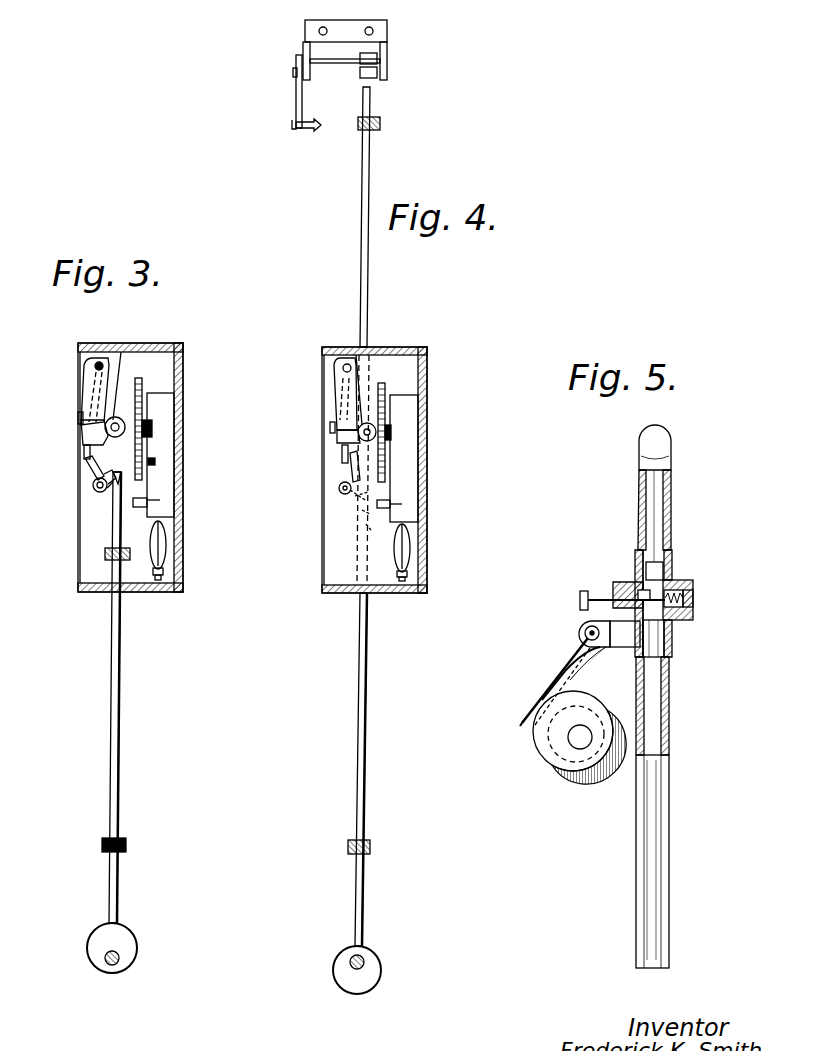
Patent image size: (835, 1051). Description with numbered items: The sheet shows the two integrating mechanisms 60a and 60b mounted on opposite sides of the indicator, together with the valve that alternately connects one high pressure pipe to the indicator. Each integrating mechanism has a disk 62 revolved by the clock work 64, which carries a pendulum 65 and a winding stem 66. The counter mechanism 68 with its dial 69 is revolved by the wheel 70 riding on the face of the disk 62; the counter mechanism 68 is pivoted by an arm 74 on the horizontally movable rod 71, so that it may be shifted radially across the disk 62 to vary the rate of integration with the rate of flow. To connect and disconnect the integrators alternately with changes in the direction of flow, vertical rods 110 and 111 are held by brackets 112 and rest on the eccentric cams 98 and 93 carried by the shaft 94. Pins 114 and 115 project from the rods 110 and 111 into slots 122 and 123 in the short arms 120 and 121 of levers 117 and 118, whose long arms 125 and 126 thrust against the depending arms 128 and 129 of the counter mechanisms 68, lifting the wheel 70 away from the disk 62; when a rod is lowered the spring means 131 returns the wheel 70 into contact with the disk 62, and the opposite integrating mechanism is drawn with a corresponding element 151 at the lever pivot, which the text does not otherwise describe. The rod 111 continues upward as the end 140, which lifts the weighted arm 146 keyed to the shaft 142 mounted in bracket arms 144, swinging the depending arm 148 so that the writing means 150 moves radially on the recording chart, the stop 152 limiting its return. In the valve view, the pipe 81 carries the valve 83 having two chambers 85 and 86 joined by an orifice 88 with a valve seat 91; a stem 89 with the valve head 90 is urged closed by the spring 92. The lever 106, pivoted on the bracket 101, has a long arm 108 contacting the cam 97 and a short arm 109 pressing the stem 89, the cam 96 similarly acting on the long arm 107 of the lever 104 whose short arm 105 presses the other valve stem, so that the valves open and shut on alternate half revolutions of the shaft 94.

In FIG. 3, the integrating mechanism 60a is at (177, 344).
In FIG. 4, the integrating mechanism 60b is at (413, 347).
In FIG. 3, the disk 62 is at (143, 388).
In FIG. 4, the disk 62 is at (386, 389).
In FIG. 3, the clock work 64 is at (163, 438).
In FIG. 4, the clock work 64 is at (405, 442).
In FIG. 3, the pendulum 65 is at (163, 548).
In FIG. 4, the pendulum 65 is at (410, 549).
In FIG. 3, the winding stem 66 is at (147, 492).
In FIG. 4, the winding stem 66 is at (388, 496).
In FIG. 3, the counter mechanism 68 is at (92, 433).
In FIG. 4, the counter mechanism 68 is at (338, 438).
In FIG. 3, the dial 69 is at (80, 421).
In FIG. 4, the dial 69 is at (331, 423).
In FIG. 3, the wheel 70 is at (119, 419).
In FIG. 4, the wheel 70 is at (367, 432).
In FIG. 3, the horizontally movable rod 71 is at (89, 352).
In FIG. 4, the horizontally movable rod 71 is at (341, 357).
In FIG. 3, the arm 74 is at (116, 352).
In FIG. 4, the arm 74 is at (356, 347).
In FIG. 5, the pipe 81 is at (653, 818).
In FIG. 5, the valve 83 is at (631, 553).
In FIG. 5, the chamber 85 is at (660, 566).
In FIG. 5, the chamber 86 is at (657, 630).
In FIG. 5, the orifice 88 is at (674, 579).
In FIG. 5, the stem 89 is at (609, 596).
In FIG. 5, the valve head 90 is at (694, 610).
In FIG. 5, the valve seat 91 is at (684, 588).
In FIG. 5, the spring 92 is at (694, 599).
In FIG. 4, the eccentric cam 93 is at (379, 960).
In FIG. 3, the shaft 94 is at (118, 963).
In FIG. 4, the shaft 94 is at (349, 959).
In FIG. 5, the shaft 94 is at (578, 739).
In FIG. 5, the eccentric cam 96 is at (597, 783).
In FIG. 5, the eccentric cam 97 is at (547, 747).
In FIG. 3, the eccentric cam 98 is at (118, 937).
In FIG. 5, the bracket 101 is at (608, 640).
In FIG. 5, the lever 104 is at (590, 655).
In FIG. 5, the short arm 105 is at (580, 598).
In FIG. 5, the lever 106 is at (583, 646).
In FIG. 5, the long arm 107 is at (575, 686).
In FIG. 5, the long arm 108 is at (552, 674).
In FIG. 5, the short arm 109 is at (596, 597).
In FIG. 3, the vertical rod 110 is at (115, 670).
In FIG. 4, the vertical rod 111 is at (365, 648).
In FIG. 3, the bracket 112 is at (105, 556).
In FIG. 4, the bracket 112 is at (381, 123).
In FIG. 3, the pin 114 is at (116, 493).
In FIG. 4, the pin 115 is at (368, 528).
In FIG. 3, the lever 117 is at (96, 488).
In FIG. 4, the lever 118 is at (340, 490).
In FIG. 3, the short arm 120 is at (110, 490).
In FIG. 4, the short arm 121 is at (365, 518).
In FIG. 3, the slot 122 is at (105, 473).
In FIG. 4, the slot 123 is at (345, 500).
In FIG. 3, the long arm 125 is at (95, 462).
In FIG. 4, the long arm 126 is at (351, 470).
In FIG. 3, the depending arm 128 is at (87, 449).
In FIG. 4, the depending arm 129 is at (343, 455).
In FIG. 3, the spring means 131 is at (95, 388).
In FIG. 4, the upper end of vertical rod 140 is at (362, 182).
In FIG. 4, the shaft 142 is at (313, 63).
In FIG. 4, the bracket arm 144 is at (302, 46).
In FIG. 4, the arm 146 is at (378, 70).
In FIG. 4, the depending arm 148 is at (296, 107).
In FIG. 4, the writing means 150 is at (303, 128).
In FIG. 4, the spring 151 is at (350, 387).
In FIG. 4, the stop 152 is at (294, 70).